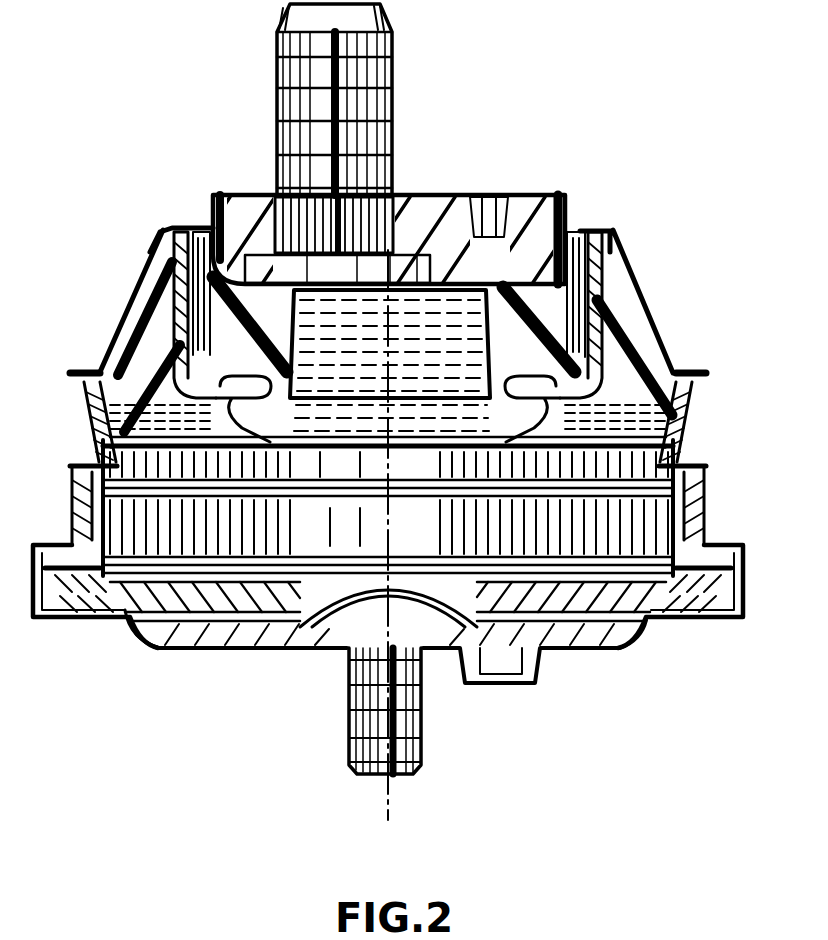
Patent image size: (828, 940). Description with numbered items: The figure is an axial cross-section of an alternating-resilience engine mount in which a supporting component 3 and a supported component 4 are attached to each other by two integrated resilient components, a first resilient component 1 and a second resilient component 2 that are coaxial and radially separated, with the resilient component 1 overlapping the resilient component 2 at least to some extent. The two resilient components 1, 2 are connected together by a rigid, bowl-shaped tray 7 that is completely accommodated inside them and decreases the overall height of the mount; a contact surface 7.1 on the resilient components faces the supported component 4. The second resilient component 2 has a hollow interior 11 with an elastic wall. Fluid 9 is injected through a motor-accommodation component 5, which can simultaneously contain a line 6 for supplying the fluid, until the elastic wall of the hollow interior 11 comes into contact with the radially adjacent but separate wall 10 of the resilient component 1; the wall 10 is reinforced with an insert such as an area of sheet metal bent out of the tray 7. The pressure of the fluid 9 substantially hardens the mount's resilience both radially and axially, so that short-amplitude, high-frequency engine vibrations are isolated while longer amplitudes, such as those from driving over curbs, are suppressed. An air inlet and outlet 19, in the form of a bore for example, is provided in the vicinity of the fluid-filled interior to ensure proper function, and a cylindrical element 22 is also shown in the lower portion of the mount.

The resilient component 1 is at (637, 330).
The resilient component 2 is at (570, 228).
The supporting component 3 is at (437, 197).
The supported component 4 is at (577, 655).
The motor-accommodation component 5 is at (298, 178).
The line 6 is at (390, 62).
The tray 7 is at (183, 383).
The contact surface 7.1 is at (173, 283).
The fluid 9 is at (303, 370).
The wall 10 is at (603, 297).
The hollow interior 11 is at (462, 340).
The air inlet and outlet 19 is at (147, 653).
The cylindrical element 22 is at (390, 512).